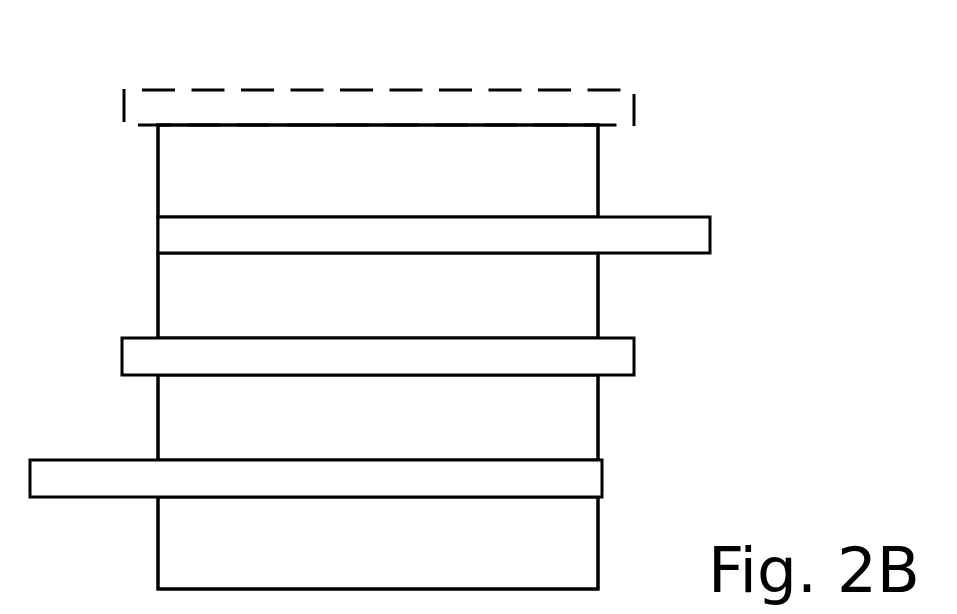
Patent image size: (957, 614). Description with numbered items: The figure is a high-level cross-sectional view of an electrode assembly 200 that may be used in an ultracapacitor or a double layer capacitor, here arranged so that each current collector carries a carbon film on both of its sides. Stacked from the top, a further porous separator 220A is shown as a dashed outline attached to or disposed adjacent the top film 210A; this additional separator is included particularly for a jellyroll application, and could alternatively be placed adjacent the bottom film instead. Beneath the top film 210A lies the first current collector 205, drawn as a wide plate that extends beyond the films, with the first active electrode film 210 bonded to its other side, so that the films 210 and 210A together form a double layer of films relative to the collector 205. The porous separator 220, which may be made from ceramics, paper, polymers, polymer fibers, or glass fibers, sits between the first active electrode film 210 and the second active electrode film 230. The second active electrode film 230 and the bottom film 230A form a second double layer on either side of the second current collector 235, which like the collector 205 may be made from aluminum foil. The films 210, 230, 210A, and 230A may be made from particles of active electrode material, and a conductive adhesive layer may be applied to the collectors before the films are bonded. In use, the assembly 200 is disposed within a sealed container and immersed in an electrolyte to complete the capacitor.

The electrode assembly 200 is at (146, 60).
The further porous separator 220A is at (285, 118).
The active electrode film (top film) 210A is at (352, 186).
The first current collector 205 is at (398, 246).
The first active electrode film 210 is at (398, 310).
The porous separator 220 is at (398, 370).
The second active electrode film 230 is at (398, 424).
The second current collector 235 is at (398, 490).
The active electrode film (bottom film) 230A is at (506, 556).